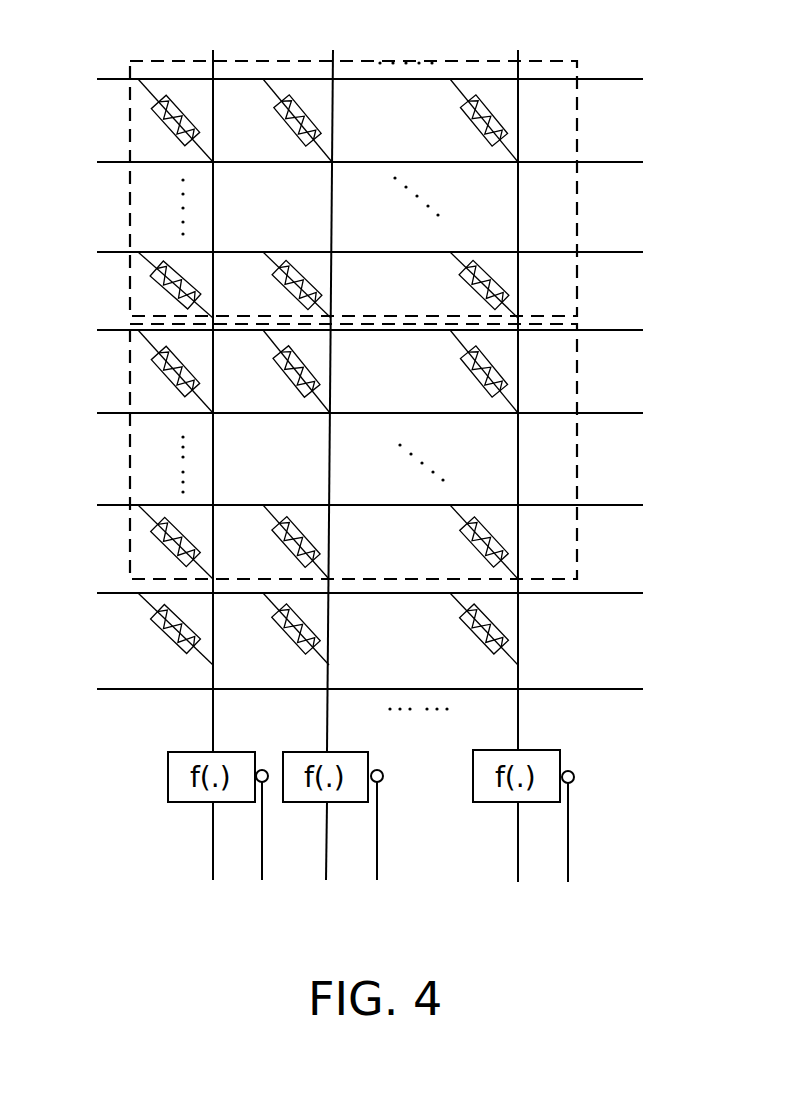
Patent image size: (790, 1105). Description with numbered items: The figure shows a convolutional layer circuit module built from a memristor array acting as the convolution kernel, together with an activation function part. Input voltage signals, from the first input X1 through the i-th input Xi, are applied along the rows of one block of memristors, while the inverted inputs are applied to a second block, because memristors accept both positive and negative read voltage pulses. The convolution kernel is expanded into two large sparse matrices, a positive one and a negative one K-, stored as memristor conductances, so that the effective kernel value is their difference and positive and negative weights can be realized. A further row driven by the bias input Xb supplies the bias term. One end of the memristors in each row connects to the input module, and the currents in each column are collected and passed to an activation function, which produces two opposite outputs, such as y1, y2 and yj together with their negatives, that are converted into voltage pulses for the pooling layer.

The input voltage signal X1 is at (350, 78).
The input voltage signal Xi is at (352, 254).
The input voltage signal of the bias term Xb is at (351, 595).
The negative convolution kernel sparse matrix K- is at (411, 451).
The convolution operation output y1 is at (217, 861).
The convolution operation output y2 is at (332, 861).
The convolution operation output yj is at (514, 861).